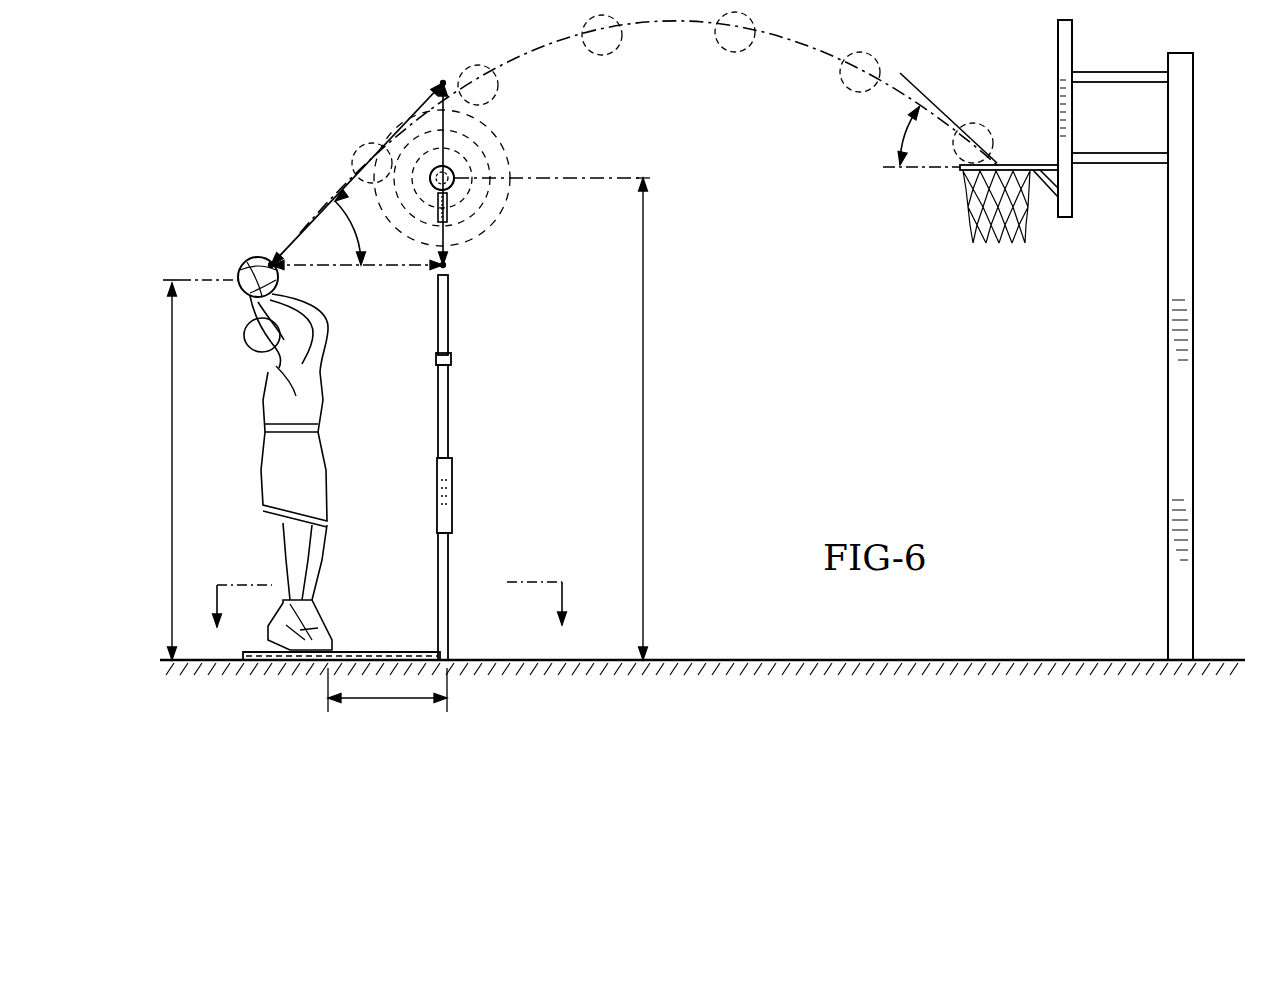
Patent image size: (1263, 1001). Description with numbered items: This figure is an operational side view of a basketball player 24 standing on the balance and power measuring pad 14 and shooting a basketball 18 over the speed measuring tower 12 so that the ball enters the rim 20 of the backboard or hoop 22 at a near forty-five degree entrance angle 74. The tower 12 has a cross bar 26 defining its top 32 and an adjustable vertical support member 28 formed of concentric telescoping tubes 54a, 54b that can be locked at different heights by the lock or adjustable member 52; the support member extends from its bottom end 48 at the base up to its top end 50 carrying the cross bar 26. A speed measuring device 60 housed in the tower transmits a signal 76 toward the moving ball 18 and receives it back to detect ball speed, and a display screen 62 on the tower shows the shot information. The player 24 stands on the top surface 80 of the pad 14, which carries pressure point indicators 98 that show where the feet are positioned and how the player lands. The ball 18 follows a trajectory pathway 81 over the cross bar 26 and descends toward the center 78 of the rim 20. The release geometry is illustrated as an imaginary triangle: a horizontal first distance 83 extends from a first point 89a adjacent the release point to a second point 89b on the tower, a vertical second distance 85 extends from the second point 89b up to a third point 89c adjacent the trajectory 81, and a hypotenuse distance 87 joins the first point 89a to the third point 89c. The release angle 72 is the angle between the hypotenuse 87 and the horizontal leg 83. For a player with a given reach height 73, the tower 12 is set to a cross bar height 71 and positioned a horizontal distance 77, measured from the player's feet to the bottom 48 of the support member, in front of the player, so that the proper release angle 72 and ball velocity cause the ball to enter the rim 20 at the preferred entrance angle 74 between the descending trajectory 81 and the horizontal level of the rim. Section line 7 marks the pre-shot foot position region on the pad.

The section line 7- 7 is at (389, 619).
The speed measuring tower 12 is at (488, 467).
The balance and power measuring pad 14 is at (348, 648).
The basketball 18 is at (238, 292).
The rim 20 is at (963, 172).
The basketball backboard 22 is at (1074, 33).
The basketball player 24 is at (318, 400).
The cross bar 26 is at (458, 172).
The adjustable vertical support member 28 is at (483, 467).
The top 32 is at (448, 152).
The bottom end 48 is at (451, 647).
The top end 50 is at (452, 210).
The lock or adjustable member 52 is at (452, 360).
The telescoping tube 54a is at (449, 303).
The telescoping tube 54b is at (450, 560).
The speed measuring device 60 is at (500, 205).
The display screen 62 is at (453, 488).
The cross bar height 71 is at (646, 412).
The release angle 72 is at (366, 222).
The reach height 73 is at (176, 452).
The entrance angle 74 is at (907, 130).
The signal 76 is at (420, 157).
The horizontal distance 77 is at (388, 700).
The center of the rim 78 is at (1000, 165).
The top surface 80 is at (383, 652).
The ball trajectory pathway 81 is at (683, 30).
The first distance 83 is at (350, 268).
The second distance 85 is at (447, 232).
The hypotenuse distance 87 is at (330, 207).
The first point 89a is at (270, 262).
The second point 89b is at (448, 265).
The third point 89c is at (440, 82).
The pressure point indicators 98 is at (413, 656).